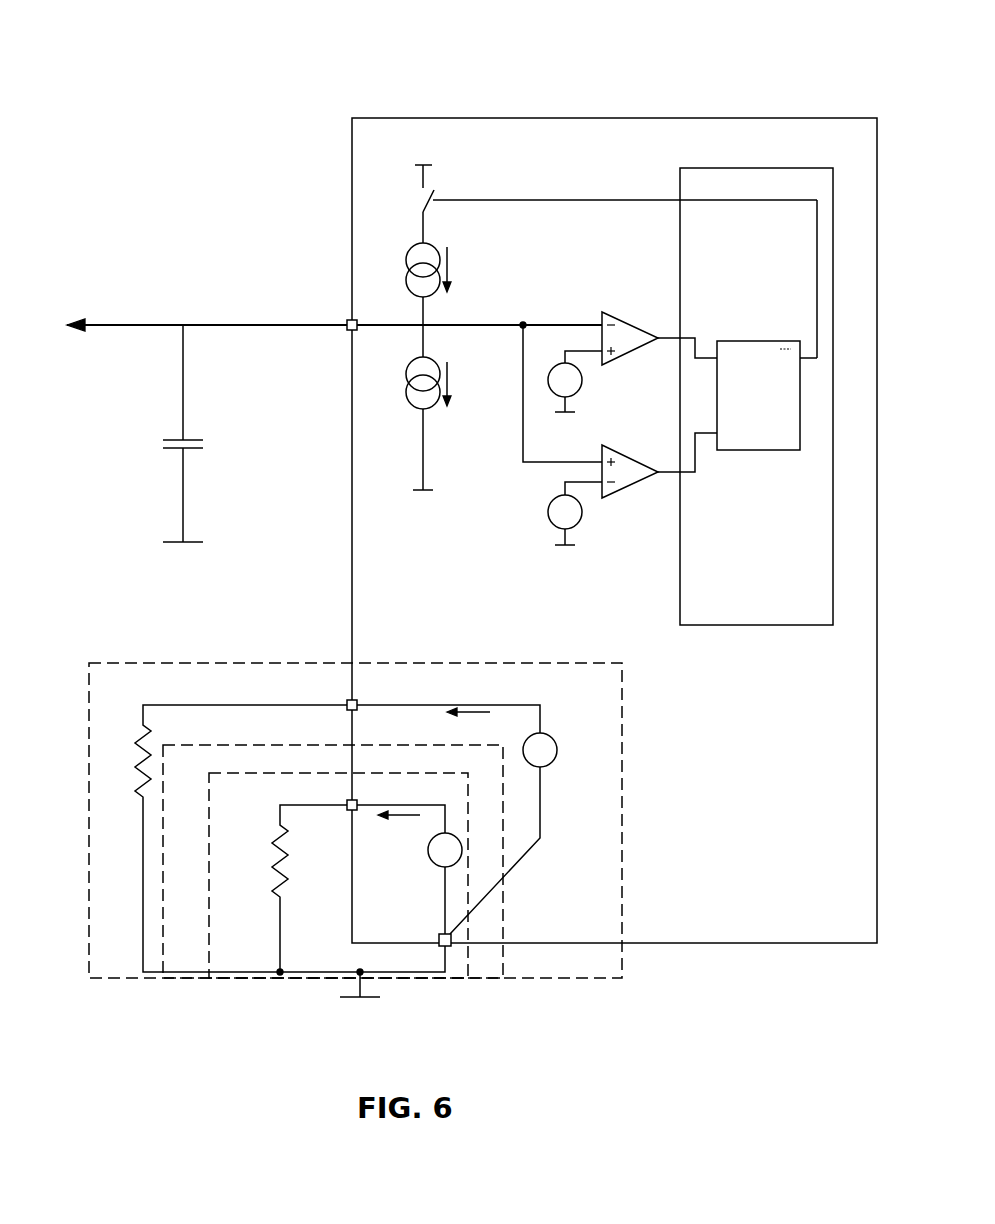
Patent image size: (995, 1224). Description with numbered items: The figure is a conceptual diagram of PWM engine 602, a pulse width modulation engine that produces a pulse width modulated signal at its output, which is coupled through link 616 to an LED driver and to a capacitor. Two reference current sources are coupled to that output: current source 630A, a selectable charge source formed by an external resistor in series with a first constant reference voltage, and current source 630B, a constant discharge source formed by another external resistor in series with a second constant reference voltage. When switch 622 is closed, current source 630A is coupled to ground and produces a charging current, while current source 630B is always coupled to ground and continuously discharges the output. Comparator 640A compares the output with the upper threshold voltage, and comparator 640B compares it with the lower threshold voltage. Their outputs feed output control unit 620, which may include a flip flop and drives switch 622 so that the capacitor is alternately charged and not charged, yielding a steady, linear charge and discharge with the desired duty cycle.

The PWM engine 602 is at (762, 46).
The link 616 is at (120, 323).
The output control unit 620 is at (772, 614).
The switch 622 is at (397, 195).
The current source 630A is at (395, 268).
The current source 630B is at (390, 380).
The comparator 640A is at (604, 312).
The comparator 640B is at (604, 445).